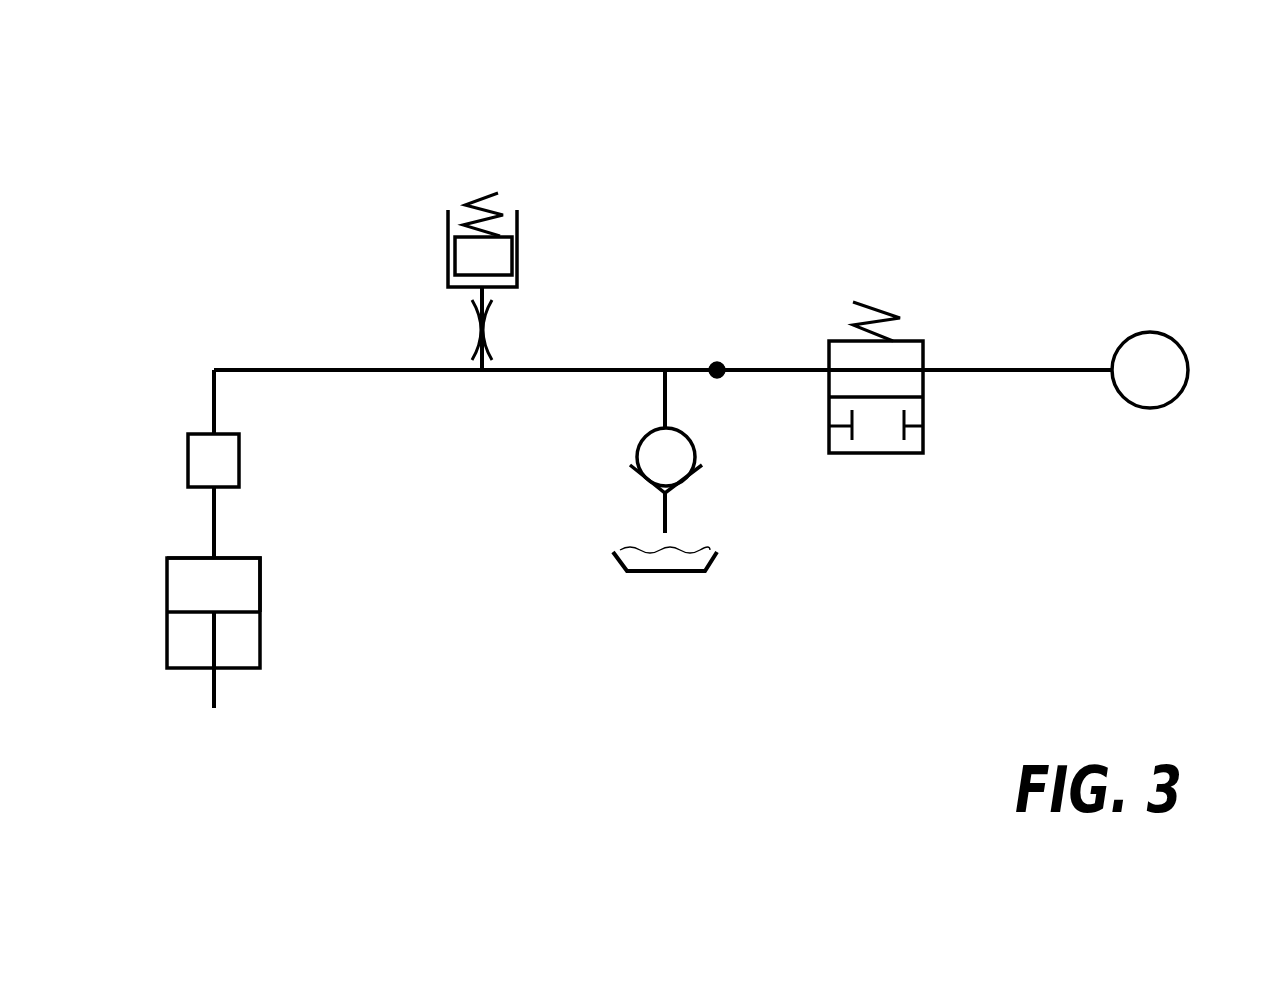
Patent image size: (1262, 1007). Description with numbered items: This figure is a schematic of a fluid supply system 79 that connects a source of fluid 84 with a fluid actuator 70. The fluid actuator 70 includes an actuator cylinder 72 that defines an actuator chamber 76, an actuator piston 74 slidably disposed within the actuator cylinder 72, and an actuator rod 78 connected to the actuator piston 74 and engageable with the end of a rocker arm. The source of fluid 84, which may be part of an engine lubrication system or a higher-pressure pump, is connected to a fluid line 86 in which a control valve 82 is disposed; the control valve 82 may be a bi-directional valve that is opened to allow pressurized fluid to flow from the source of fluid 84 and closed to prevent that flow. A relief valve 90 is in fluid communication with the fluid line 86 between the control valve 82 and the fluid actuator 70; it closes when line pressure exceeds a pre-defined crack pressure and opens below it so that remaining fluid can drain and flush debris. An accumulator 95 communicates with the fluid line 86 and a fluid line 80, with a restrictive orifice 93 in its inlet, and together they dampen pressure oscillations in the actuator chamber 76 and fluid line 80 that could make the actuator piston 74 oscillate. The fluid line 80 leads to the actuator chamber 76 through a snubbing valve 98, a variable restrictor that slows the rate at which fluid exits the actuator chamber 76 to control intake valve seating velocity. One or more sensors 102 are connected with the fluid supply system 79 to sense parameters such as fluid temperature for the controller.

The fluid actuator 70 is at (232, 604).
The actuator cylinder 72 is at (167, 646).
The actuator piston 74 is at (230, 614).
The actuator chamber 76 is at (260, 576).
The actuator rod 78 is at (216, 690).
The fluid supply system 79 is at (912, 155).
The fluid line 80 is at (212, 397).
The control valve 82 is at (923, 352).
The source of fluid 84 is at (1178, 344).
The fluid line 86 is at (370, 370).
The relief valve 90 is at (645, 447).
The restrictive orifice 93 is at (485, 330).
The accumulator 95 is at (512, 240).
The snubbing valve 98 is at (188, 460).
The sensors 102 is at (718, 378).